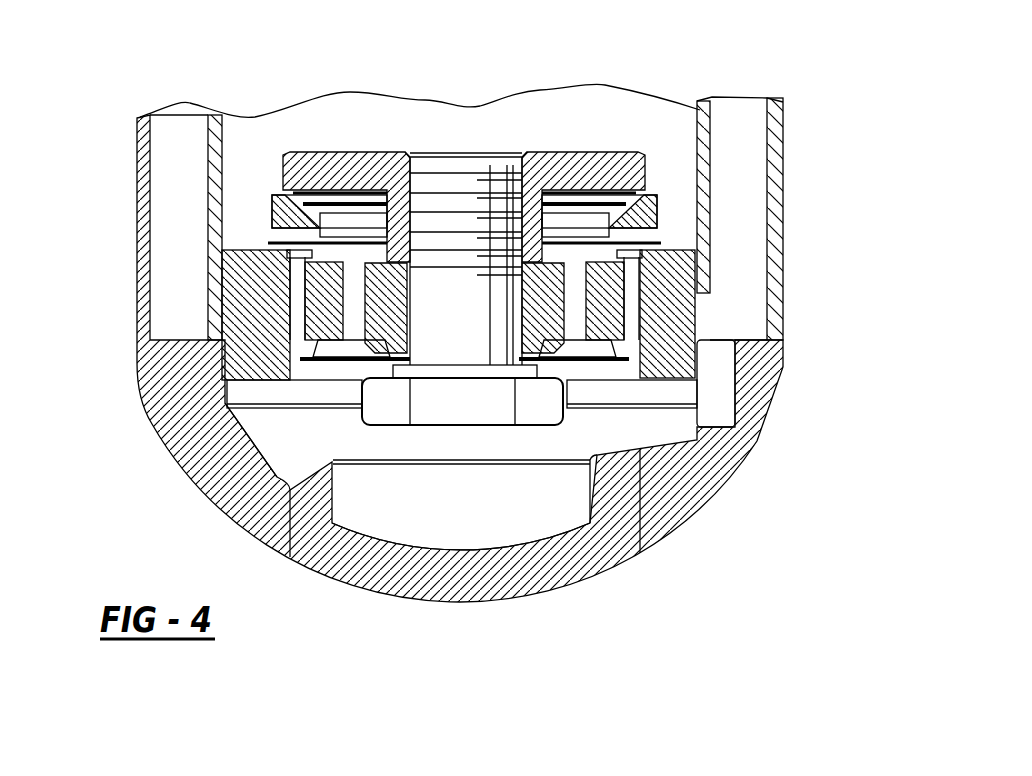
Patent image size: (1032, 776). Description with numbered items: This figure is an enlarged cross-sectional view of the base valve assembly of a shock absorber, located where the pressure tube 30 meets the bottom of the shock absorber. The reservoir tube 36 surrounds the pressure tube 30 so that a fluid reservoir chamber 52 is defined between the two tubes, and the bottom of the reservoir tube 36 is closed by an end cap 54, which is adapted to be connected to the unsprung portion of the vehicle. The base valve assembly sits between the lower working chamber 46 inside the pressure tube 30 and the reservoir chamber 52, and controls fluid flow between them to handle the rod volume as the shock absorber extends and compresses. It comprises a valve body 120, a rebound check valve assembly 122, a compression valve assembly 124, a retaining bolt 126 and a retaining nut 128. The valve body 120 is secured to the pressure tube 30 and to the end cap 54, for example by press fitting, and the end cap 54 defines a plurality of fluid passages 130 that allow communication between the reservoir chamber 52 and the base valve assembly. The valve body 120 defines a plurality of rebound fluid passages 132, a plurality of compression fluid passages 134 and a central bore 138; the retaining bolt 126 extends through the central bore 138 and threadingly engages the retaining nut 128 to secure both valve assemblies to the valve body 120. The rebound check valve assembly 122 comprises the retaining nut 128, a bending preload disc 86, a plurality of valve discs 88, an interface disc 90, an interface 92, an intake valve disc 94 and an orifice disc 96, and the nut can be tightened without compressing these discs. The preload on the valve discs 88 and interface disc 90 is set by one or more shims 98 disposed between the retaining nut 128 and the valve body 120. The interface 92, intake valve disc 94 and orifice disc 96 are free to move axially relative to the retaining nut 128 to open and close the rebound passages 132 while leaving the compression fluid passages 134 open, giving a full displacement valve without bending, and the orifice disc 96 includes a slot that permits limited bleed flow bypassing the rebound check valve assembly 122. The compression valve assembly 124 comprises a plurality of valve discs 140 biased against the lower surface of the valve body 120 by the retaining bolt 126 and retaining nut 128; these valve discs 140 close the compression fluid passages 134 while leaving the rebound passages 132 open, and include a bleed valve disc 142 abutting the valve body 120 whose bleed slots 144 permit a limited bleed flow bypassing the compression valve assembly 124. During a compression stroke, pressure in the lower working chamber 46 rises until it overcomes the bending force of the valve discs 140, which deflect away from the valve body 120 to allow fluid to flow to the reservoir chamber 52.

The pressure tube 30 is at (207, 193).
The reservoir tube 36 is at (776, 182).
The lower working chamber 46 is at (590, 127).
The fluid reservoir chamber 52 is at (187, 155).
The end cap 54 is at (550, 563).
The bending preload disc 86 is at (600, 205).
The valve discs 88 is at (600, 155).
The interface disc 90 is at (618, 228).
The interface 92 is at (660, 197).
The intake valve disc 94 is at (655, 238).
The orifice disc 96 is at (300, 230).
The shims 98 is at (343, 302).
The valve body 120 is at (670, 328).
The rebound check valve assembly 122 is at (287, 135).
The compression valve assembly 124 is at (312, 413).
The retaining bolt 126 is at (472, 400).
The retaining nut 128 is at (617, 152).
The fluid passages 130 is at (697, 440).
The rebound fluid passages 132 is at (640, 337).
The compression fluid passages 134 is at (580, 308).
The central bore 138 is at (400, 272).
The valve discs 140 is at (293, 347).
The bleed valve disc 142 is at (637, 337).
The bleed slots 144 is at (703, 407).